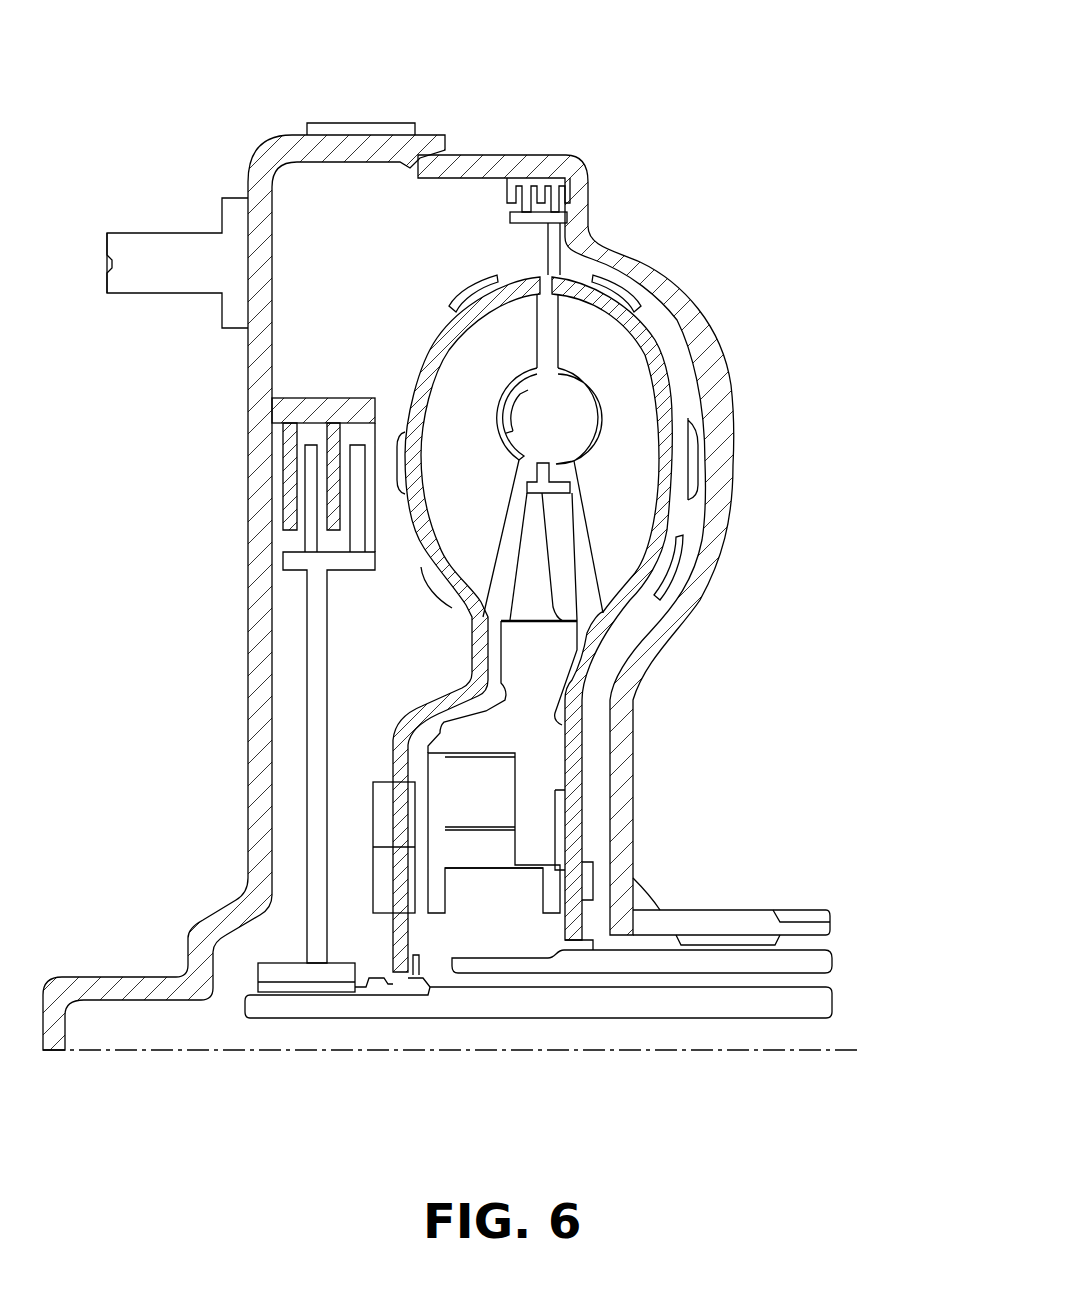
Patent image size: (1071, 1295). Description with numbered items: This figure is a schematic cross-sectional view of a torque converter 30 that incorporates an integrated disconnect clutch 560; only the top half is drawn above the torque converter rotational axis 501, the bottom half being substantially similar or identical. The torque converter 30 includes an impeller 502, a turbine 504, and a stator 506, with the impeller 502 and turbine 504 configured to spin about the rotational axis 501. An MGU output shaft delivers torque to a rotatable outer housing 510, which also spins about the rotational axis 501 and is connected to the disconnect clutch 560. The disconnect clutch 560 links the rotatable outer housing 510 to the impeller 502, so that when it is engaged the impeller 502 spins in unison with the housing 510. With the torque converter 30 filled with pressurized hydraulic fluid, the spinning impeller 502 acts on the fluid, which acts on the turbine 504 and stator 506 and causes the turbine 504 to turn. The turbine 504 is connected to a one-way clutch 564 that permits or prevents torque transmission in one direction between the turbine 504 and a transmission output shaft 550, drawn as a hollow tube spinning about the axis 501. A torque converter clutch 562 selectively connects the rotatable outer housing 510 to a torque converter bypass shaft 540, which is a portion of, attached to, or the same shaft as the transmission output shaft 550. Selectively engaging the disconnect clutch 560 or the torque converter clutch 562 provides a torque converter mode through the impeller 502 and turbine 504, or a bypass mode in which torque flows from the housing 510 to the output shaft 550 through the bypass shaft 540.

The torque converter 30 is at (843, 119).
The torque converter rotational axis 501 is at (713, 1050).
The impeller 502 is at (660, 347).
The turbine 504 is at (453, 330).
The stator 506 is at (562, 574).
The rotatable outer housing 510 is at (638, 255).
The torque converter bypass shaft 540 is at (298, 1010).
The transmission output shaft 550 is at (637, 1005).
The disconnect clutch 560 is at (567, 188).
The torque converter clutch 562 is at (288, 477).
The one-way clutch 564 is at (373, 817).